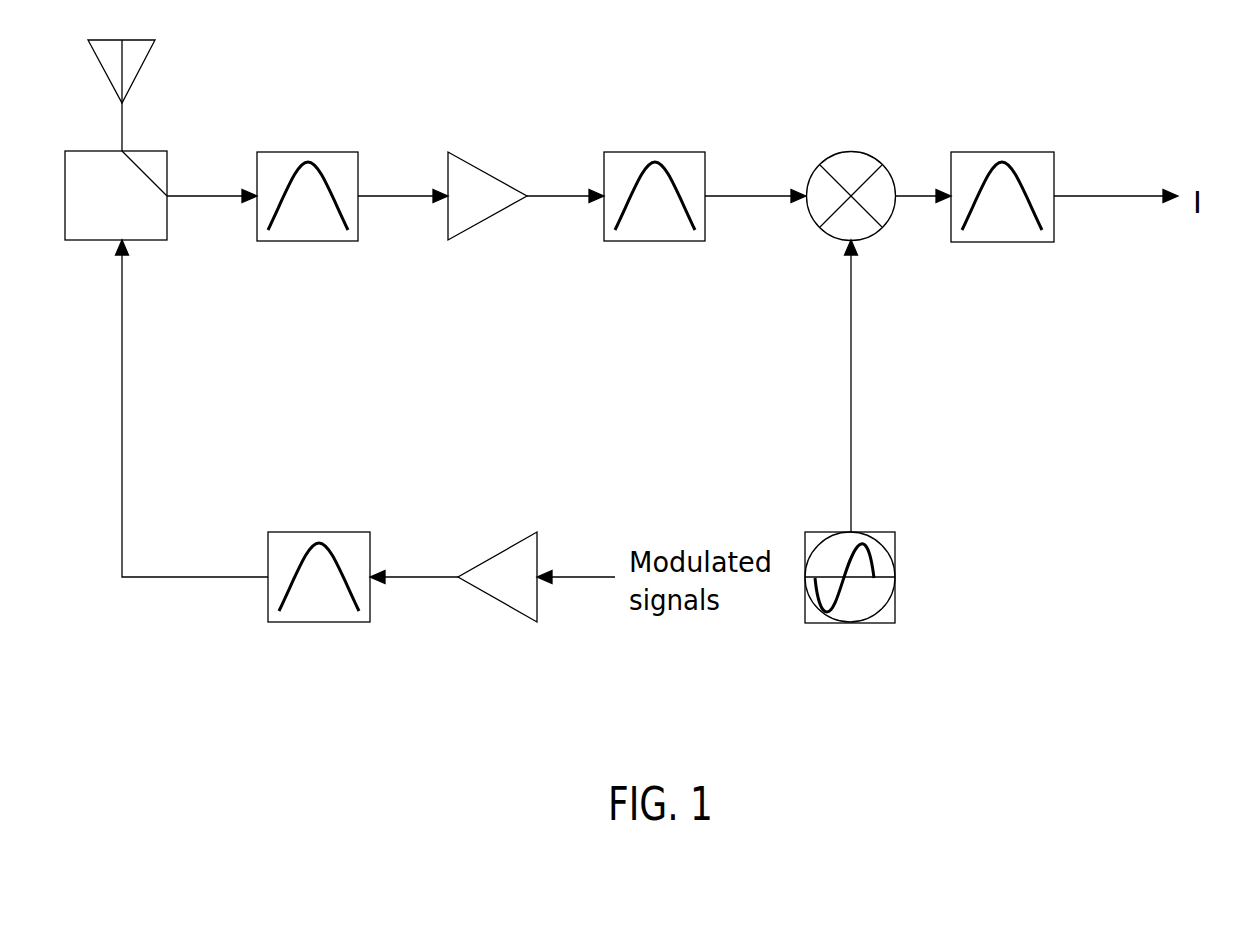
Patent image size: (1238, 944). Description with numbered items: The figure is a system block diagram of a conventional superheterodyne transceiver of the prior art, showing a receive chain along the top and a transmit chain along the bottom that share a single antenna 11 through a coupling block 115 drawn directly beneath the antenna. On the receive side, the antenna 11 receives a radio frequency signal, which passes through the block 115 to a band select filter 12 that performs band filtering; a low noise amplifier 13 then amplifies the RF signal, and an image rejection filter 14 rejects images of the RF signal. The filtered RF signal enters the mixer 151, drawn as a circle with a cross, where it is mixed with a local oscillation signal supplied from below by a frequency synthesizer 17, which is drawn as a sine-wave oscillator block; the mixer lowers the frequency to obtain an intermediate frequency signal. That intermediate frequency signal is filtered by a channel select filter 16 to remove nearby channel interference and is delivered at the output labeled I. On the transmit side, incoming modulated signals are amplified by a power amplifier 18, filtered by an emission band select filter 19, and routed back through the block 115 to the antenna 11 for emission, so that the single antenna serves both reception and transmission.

The antenna 11 is at (145, 62).
The duplexer / antenna switch 115 is at (143, 151).
The band select filter 12 is at (308, 151).
The low noise amplifier 13 is at (468, 162).
The image rejection filter 14 is at (650, 152).
The mixer 151 is at (852, 151).
The channel select filter 16 is at (997, 151).
The frequency synthesizer 17 is at (871, 532).
The power amplifier 18 is at (526, 532).
The emission band select filter 19 is at (314, 532).